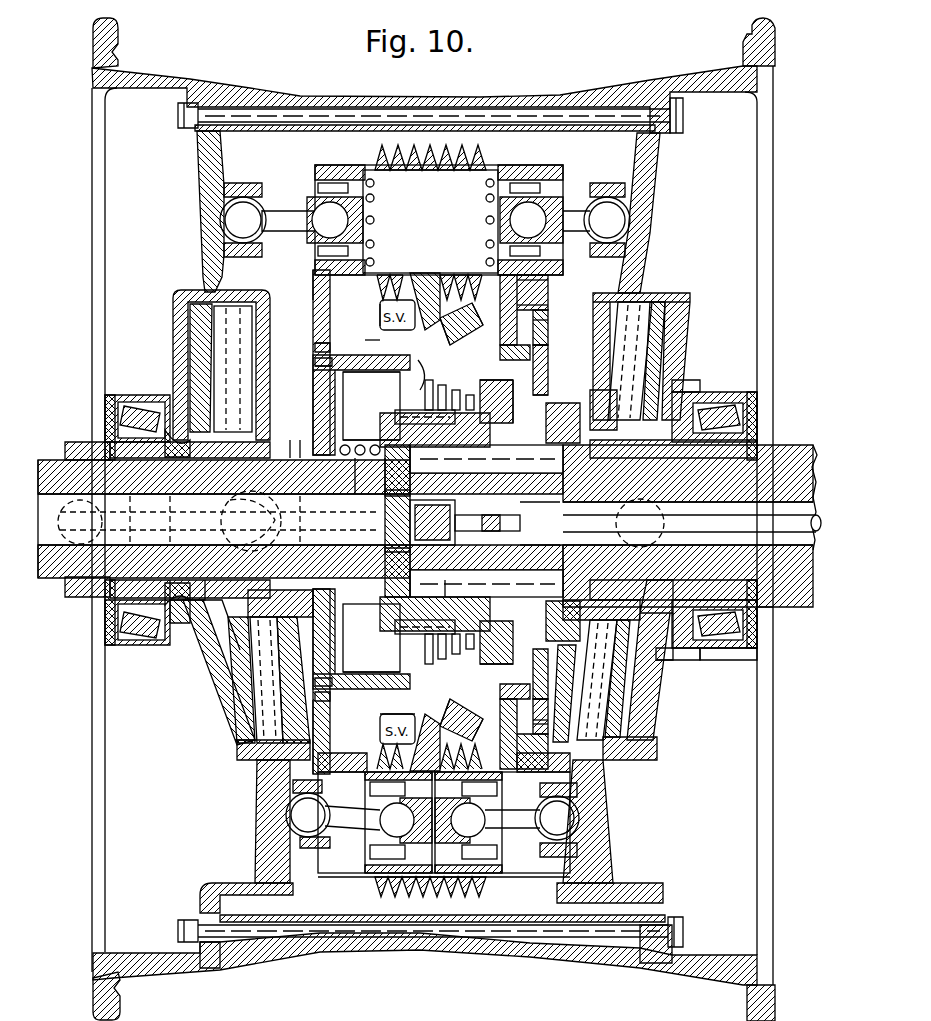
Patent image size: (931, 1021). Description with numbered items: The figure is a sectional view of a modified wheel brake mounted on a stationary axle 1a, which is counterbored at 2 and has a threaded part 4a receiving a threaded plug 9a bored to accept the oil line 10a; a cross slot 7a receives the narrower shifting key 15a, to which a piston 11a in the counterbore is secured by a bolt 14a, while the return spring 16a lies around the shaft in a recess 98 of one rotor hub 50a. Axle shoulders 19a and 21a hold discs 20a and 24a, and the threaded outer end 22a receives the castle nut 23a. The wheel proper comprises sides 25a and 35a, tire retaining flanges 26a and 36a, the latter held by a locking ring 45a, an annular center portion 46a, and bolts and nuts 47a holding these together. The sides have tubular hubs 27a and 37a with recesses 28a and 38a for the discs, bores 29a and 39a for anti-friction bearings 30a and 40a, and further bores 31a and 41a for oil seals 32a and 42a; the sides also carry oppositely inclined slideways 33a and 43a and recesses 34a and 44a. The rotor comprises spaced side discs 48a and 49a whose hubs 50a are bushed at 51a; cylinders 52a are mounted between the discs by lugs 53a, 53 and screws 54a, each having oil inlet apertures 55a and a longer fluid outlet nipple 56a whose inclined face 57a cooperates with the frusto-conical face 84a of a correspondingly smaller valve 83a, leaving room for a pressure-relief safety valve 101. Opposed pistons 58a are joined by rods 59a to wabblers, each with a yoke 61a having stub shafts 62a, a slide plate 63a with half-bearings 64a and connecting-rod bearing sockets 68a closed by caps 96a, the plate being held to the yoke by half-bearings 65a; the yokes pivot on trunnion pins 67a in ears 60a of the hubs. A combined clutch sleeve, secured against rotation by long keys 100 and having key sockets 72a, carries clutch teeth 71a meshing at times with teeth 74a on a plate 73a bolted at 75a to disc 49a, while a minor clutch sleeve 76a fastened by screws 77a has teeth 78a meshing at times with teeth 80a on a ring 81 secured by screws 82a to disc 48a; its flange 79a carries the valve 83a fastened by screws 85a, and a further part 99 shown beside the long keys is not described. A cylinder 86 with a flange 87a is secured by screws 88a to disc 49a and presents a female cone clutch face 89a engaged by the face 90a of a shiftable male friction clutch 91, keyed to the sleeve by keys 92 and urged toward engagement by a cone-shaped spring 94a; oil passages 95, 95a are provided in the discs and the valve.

The axle 1a is at (782, 610).
The counterbore 2 is at (436, 459).
The threaded part 4a is at (519, 587).
The cross slot 7a is at (397, 572).
The threaded plug 9a is at (454, 592).
The oil line 10a is at (800, 447).
The piston 11a is at (400, 470).
The bolt 14a is at (383, 521).
The shifting key 15a is at (386, 541).
The return spring 16a is at (315, 448).
The shoulder 19a is at (760, 440).
The disc 20a is at (758, 395).
The shoulder 21a is at (150, 520).
The threaded outer end 22a is at (60, 600).
The castle nut 23a is at (82, 598).
The disc 24a is at (108, 626).
The side plate 25a is at (760, 150).
The tire retaining flange 26a is at (771, 50).
The tubular hub 27a is at (745, 665).
The recess 28a is at (760, 362).
The bore 29a is at (758, 650).
The anti-friction bearing 30a is at (720, 662).
The bore 31a is at (700, 394).
The oil seal 32a is at (684, 665).
The inclined slideway 33a is at (622, 182).
The recess 34a is at (688, 312).
The side plate 35a is at (118, 147).
The tire retaining flange 36a is at (119, 40).
The tubular hub 37a is at (140, 397).
The recess 38a is at (109, 396).
The bore 39a is at (118, 413).
The anti-friction bearing 40a is at (105, 427).
The bore 41a is at (205, 690).
The oil seal 42a is at (182, 660).
The inclined slideway 43a is at (228, 170).
The recess 44a is at (215, 700).
The locking ring 45a is at (95, 990).
The annular center portion 46a is at (507, 106).
The bolts and nuts 47a is at (518, 112).
The side disc 48a is at (542, 314).
The side disc 49a is at (314, 304).
The hub 50a is at (297, 440).
The bushing 51a is at (246, 452).
The cylinder 52a is at (525, 170).
The lug 53a is at (542, 330).
The lug 53 is at (532, 736).
The screw 54a is at (542, 297).
The oil inlet aperture 55a is at (486, 200).
The fluid outlet nipple 56a is at (455, 285).
The inclined face 57a is at (430, 290).
The piston 58a is at (370, 236).
The connecting rod 59a is at (278, 214).
The ear 60a is at (222, 518).
The yoke 61a is at (236, 633).
The stub shaft 62a is at (236, 745).
The slide plate 63a is at (276, 843).
The half-bearing 64a is at (258, 346).
The half-bearing 65a is at (190, 331).
The trunnion pin 67a is at (250, 531).
The connecting-rod bearing socket 68a is at (216, 221).
The clutch teeth 71a is at (375, 372).
The key socket 72a is at (371, 476).
The plate 73a is at (360, 372).
The clutch teeth 74a is at (372, 680).
The bolt 75a is at (425, 587).
The minor clutch sleeve 76a is at (486, 521).
The screw 77a is at (525, 459).
The clutch teeth 78a is at (555, 395).
The flange 79a is at (478, 710).
The clutch teeth 80a is at (492, 672).
The ring 81 is at (515, 380).
The screw 82a is at (560, 375).
The valve 83a is at (486, 724).
The frusto-conical face 84a is at (458, 322).
The screw 85a is at (492, 372).
The cylinder 86 is at (372, 340).
The flange 87a is at (316, 347).
The screw 88a is at (316, 361).
The female friction clutch face 89a is at (440, 690).
The clutch face 90a is at (380, 712).
The shiftable male friction clutch 91 is at (425, 360).
The key 92 is at (385, 472).
The cone-shaped spring 94a is at (446, 340).
The oil passage 95 is at (332, 740).
The oil passage 95a is at (606, 779).
The cap 96a is at (608, 201).
The recess 98 is at (262, 620).
The pin 99 is at (545, 544).
The long key 100 is at (562, 545).
The pressure-relief safety valve 101 is at (380, 312).